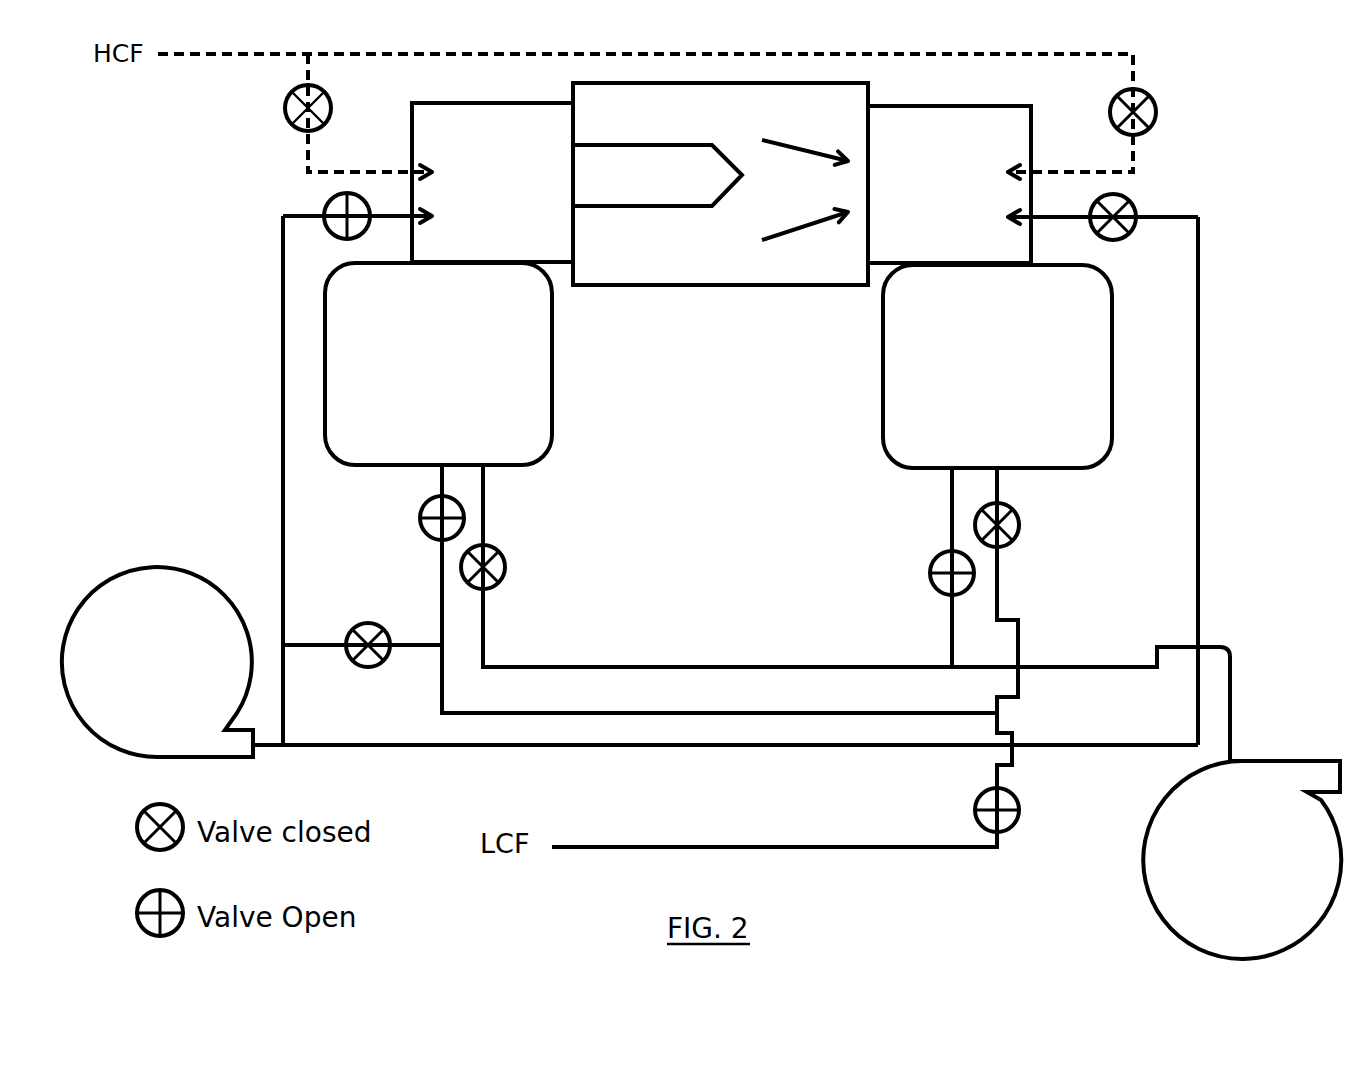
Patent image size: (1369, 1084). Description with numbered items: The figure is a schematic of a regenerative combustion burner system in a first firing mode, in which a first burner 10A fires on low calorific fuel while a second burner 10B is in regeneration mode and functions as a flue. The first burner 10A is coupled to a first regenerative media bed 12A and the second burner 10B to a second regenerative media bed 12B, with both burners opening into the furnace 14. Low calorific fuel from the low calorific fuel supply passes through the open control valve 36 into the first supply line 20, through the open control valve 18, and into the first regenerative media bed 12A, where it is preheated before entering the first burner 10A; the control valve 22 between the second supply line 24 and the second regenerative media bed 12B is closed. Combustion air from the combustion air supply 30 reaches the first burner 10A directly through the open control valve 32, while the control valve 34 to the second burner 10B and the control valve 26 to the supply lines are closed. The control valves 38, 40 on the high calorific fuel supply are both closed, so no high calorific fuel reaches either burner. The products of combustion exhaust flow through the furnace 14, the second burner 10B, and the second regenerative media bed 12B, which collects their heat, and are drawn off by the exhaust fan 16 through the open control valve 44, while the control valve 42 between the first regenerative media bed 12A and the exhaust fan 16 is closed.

The first burner 10A is at (492, 182).
The second burner 10B is at (949, 184).
The first regenerative media bed 12A is at (438, 364).
The second regenerative media bed 12B is at (997, 366).
The furnace 14 is at (720, 184).
The exhaust fan 16 is at (1242, 860).
The control valve 18 is at (420, 517).
The first supply line 20 is at (440, 573).
The control valve 22 is at (1020, 533).
The second supply line 24 is at (1000, 572).
The control valve 26 is at (367, 618).
The combustion air supply 30 is at (157, 662).
The control valve 32 is at (328, 210).
The control valve 34 is at (1137, 207).
The control valve 36 is at (1020, 815).
The control valve 38 is at (284, 107).
The control valve 40 is at (1153, 110).
The control valve 42 is at (507, 572).
The control valve 44 is at (927, 583).